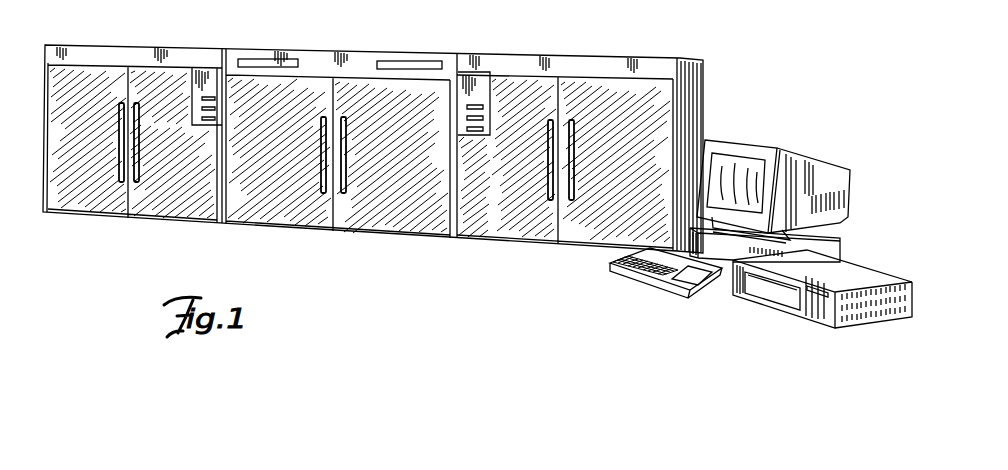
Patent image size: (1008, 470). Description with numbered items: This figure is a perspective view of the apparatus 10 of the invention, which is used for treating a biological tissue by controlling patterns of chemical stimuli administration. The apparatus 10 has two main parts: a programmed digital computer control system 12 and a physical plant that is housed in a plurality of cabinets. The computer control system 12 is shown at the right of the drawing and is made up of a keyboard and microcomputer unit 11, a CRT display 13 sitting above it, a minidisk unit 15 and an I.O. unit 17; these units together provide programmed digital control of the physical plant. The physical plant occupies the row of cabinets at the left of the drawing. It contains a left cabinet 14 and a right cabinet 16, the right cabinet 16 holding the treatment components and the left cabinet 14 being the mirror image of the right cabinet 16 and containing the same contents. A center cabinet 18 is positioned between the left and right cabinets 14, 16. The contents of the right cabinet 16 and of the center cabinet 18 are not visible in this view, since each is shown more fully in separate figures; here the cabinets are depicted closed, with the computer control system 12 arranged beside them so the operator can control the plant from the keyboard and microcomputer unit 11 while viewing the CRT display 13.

The apparatus 10 is at (422, 273).
The keyboard and microcomputer unit 11 is at (640, 283).
The programmed digital computer control system 12 is at (769, 145).
The CRT display 13 is at (724, 160).
The left cabinet 14 is at (150, 46).
The minidisk unit 15 is at (823, 312).
The right cabinet 16 is at (607, 52).
The I.O. unit 17 is at (838, 252).
The center cabinet 18 is at (365, 50).